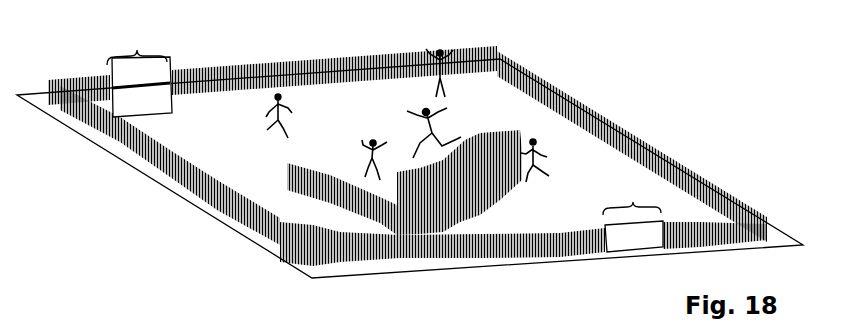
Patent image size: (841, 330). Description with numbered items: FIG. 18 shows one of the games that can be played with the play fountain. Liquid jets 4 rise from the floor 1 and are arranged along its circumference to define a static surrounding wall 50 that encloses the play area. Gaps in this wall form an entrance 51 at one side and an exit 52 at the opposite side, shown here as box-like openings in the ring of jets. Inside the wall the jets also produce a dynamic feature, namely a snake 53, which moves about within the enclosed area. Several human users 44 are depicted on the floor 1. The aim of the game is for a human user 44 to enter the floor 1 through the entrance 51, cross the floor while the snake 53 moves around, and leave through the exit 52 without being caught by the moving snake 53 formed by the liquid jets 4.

The floor 1 is at (616, 92).
The liquid jets 4 is at (370, 63).
The human user 44 is at (283, 121).
The static surrounding wall 50 is at (200, 72).
The entrance 51 is at (633, 214).
The exit 52 is at (139, 67).
The snake 53 is at (477, 182).